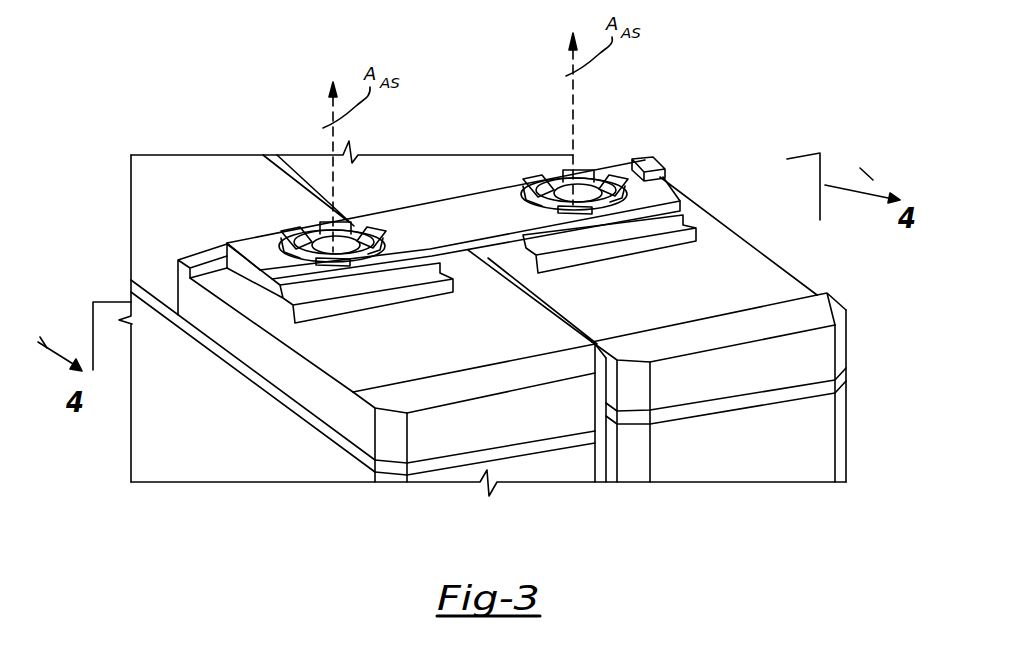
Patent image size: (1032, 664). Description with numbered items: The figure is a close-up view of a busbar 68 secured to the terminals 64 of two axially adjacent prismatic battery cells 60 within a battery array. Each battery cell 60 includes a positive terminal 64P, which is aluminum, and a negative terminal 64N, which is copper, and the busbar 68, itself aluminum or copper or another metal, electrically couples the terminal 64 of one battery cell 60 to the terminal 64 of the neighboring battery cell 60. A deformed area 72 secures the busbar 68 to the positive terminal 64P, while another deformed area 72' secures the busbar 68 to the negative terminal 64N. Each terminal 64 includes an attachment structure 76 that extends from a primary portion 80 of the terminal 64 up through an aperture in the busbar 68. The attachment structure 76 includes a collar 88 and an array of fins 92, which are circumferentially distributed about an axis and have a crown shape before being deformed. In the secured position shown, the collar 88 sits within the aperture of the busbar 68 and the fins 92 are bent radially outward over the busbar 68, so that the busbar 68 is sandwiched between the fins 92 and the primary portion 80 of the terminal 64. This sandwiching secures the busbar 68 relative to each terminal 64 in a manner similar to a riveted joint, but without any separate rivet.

The battery cell 60 is at (317, 453).
The terminal 64 is at (520, 417).
The positive terminal 64P is at (352, 390).
The negative terminal 64N is at (752, 273).
The busbar 68 is at (485, 203).
The deformed area 72 is at (331, 194).
The deformed area 72' is at (605, 150).
The attachment structure 76 is at (325, 252).
The primary portion 80 is at (360, 284).
The collar 88 is at (348, 228).
The array of fins 92 is at (380, 240).